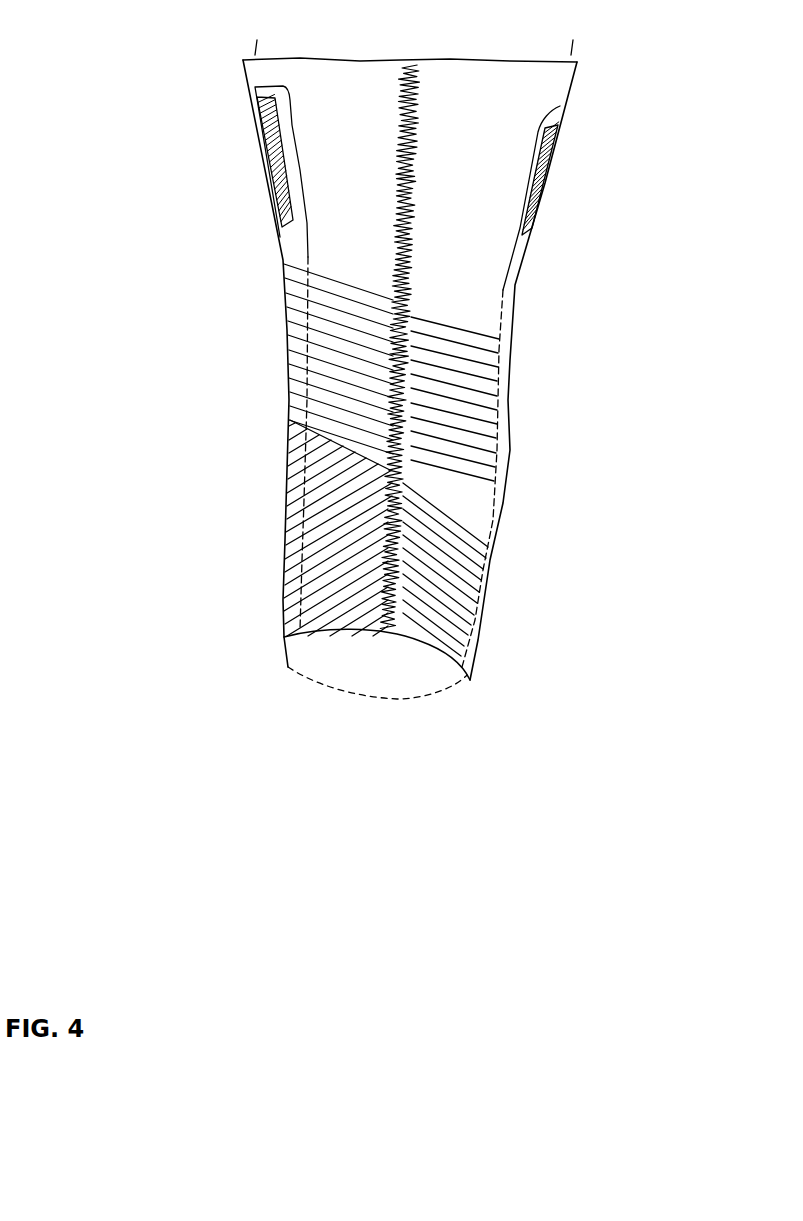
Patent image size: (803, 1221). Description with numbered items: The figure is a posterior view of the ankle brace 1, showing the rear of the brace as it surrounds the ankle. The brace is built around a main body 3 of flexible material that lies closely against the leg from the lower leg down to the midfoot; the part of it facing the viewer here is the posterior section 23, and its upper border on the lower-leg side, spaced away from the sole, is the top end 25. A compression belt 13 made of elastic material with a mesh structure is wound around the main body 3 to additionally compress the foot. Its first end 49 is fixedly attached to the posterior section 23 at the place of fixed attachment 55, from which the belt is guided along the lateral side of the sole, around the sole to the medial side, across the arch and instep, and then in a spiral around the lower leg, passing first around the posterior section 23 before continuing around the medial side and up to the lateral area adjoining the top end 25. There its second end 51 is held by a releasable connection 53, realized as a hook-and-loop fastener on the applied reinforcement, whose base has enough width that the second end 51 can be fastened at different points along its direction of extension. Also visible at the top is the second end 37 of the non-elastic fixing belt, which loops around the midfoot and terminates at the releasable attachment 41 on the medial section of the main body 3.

The ankle brace 1 is at (196, 573).
The main body 3 is at (360, 245).
The compression belt 13 is at (433, 370).
The posterior section 23 is at (413, 513).
The top end 25 is at (472, 80).
The second end 37 is at (165, 171).
The releasable attachment 41 is at (262, 143).
The first end 49 is at (557, 347).
The fixed attachment 55 is at (393, 567).
The second end 51 is at (618, 198).
The releasable connection 53 is at (538, 182).